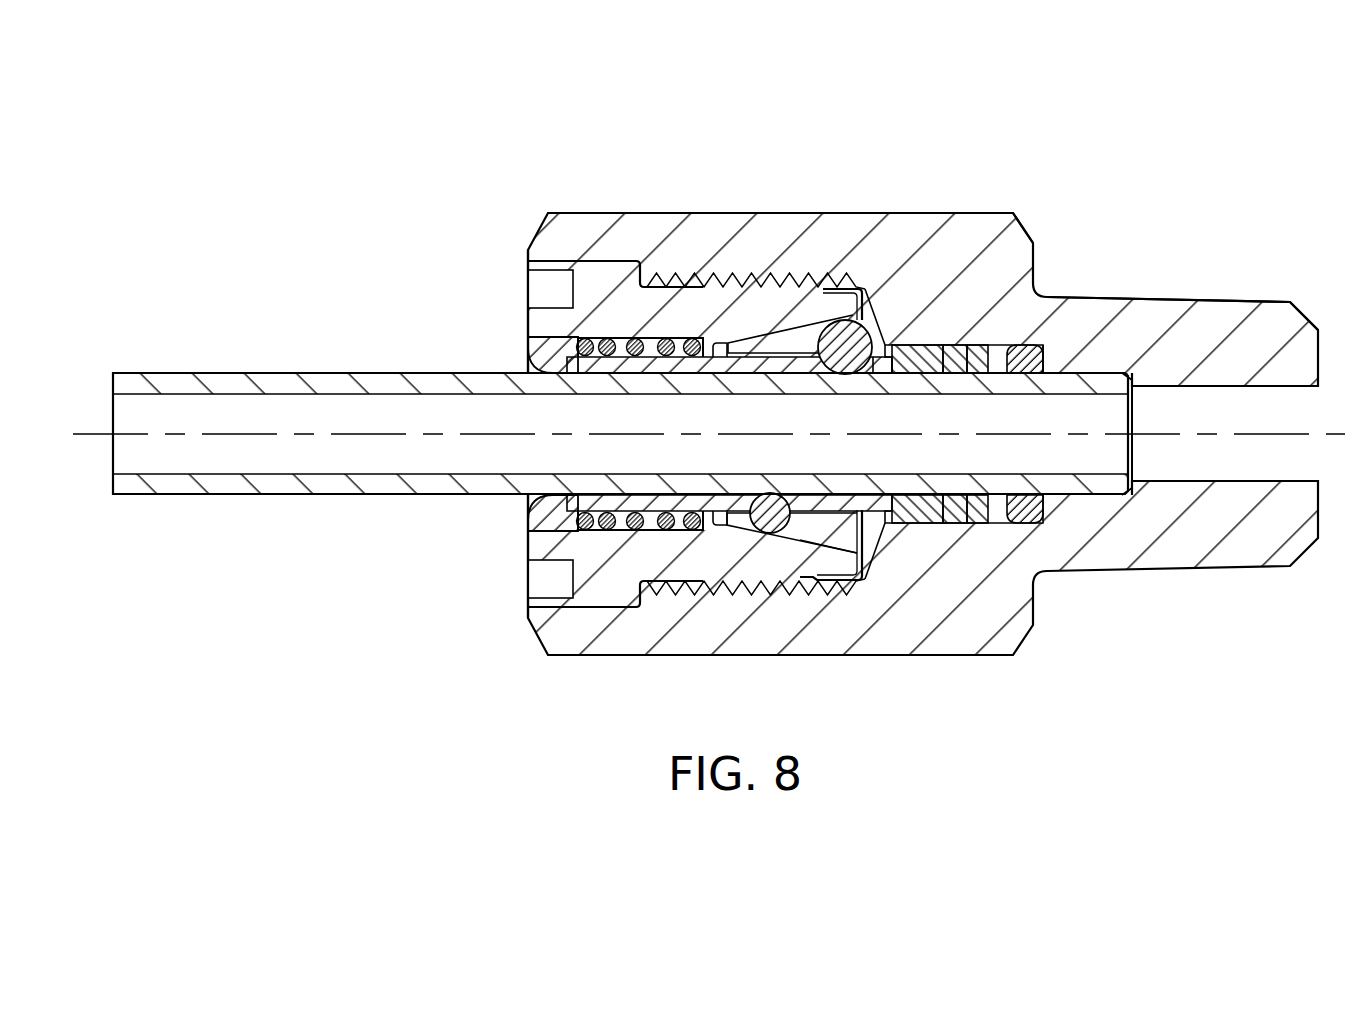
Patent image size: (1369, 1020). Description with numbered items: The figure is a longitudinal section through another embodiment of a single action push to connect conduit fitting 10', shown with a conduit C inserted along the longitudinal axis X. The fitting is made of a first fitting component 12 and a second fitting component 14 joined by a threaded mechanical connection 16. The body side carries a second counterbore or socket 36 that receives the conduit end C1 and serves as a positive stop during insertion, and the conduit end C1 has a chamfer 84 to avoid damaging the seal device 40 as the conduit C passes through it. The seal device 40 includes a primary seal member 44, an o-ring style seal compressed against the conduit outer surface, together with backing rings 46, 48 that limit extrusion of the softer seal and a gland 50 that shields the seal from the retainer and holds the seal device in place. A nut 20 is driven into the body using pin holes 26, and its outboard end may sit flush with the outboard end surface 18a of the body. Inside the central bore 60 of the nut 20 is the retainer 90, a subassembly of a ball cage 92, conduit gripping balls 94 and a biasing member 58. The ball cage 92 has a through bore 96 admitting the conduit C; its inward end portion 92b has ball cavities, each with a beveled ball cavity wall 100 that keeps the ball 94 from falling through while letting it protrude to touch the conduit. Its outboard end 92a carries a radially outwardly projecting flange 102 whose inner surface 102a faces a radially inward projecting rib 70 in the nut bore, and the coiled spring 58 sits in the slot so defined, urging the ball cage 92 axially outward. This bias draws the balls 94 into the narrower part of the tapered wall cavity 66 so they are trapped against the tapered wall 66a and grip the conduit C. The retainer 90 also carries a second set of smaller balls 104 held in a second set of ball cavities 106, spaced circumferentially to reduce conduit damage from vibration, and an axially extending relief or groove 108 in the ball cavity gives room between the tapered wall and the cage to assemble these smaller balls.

The single action push to connect conduit fitting 10' is at (1022, 167).
The first fitting component 12 is at (828, 213).
The second fitting component 14 is at (595, 600).
The threaded mechanical connection 16 is at (741, 268).
The outboard end surface of the body 18a is at (528, 258).
The nut 20 is at (588, 280).
The pin holes 26 is at (548, 290).
The second counterbore or socket 36 is at (1128, 493).
The seal device 40 is at (993, 278).
The primary seal member 44 is at (1022, 368).
The backing ring 46 is at (1016, 512).
The backing ring 48 is at (960, 505).
The gland 50 is at (904, 505).
The biasing member 58 is at (606, 356).
The central bore of the nut 60 is at (540, 355).
The tapered wall cavity 66 is at (835, 530).
The tapered wall 66a is at (820, 535).
The radially inward projecting rib 70 is at (716, 348).
The chamfer 84 is at (1130, 377).
The retainer 90 is at (702, 379).
The ball cage 92 is at (675, 526).
The outboard end of the ball cage 92a is at (528, 507).
The inward end portion of the ball cage 92b is at (886, 368).
The conduit gripping member or ball 94 is at (855, 340).
The through bore of the ball cage 96 is at (762, 364).
The ball cavity wall 100 is at (852, 368).
The radially outwardly projecting flange 102 is at (545, 530).
The inner surface of the flange 102a is at (580, 516).
The second set of spherical balls 104 is at (770, 492).
The second set of ball cavities 106 is at (708, 516).
The axially extending relief or groove 108 is at (822, 522).
The conduit C is at (212, 372).
The conduit end C1 is at (1132, 418).
The longitudinal axis X is at (95, 433).